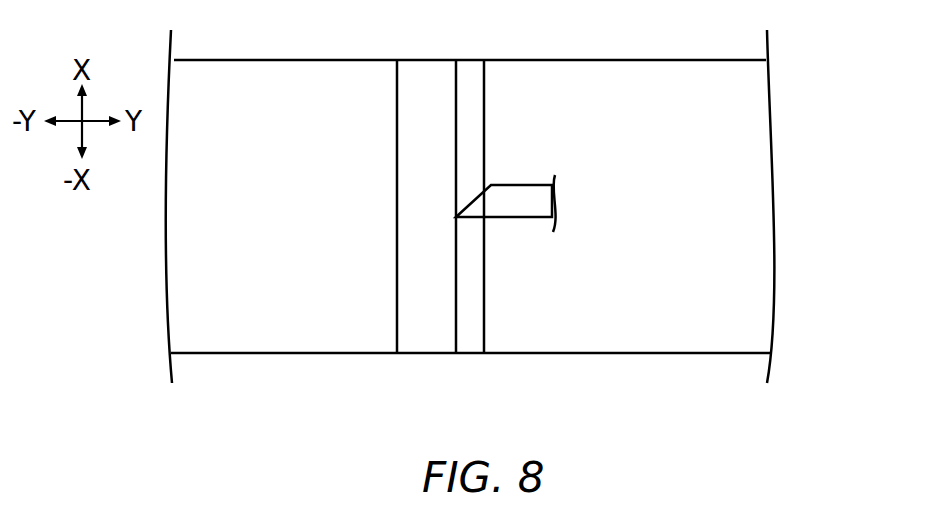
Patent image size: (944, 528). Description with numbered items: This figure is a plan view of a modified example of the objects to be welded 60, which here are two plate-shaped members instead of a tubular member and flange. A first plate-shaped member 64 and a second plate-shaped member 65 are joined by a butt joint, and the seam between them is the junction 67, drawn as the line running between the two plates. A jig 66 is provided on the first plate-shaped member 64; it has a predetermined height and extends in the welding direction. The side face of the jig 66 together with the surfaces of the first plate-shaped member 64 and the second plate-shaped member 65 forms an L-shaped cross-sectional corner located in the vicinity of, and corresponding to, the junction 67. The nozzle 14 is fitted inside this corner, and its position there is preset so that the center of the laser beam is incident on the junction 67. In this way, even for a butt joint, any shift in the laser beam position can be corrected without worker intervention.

The objects to be welded 60 is at (529, 227).
The first plate-shaped member 64 is at (295, 337).
The second plate-shaped member 65 is at (594, 337).
The jig 66 is at (415, 137).
The junction 67 is at (483, 268).
The nozzle 14 is at (519, 200).